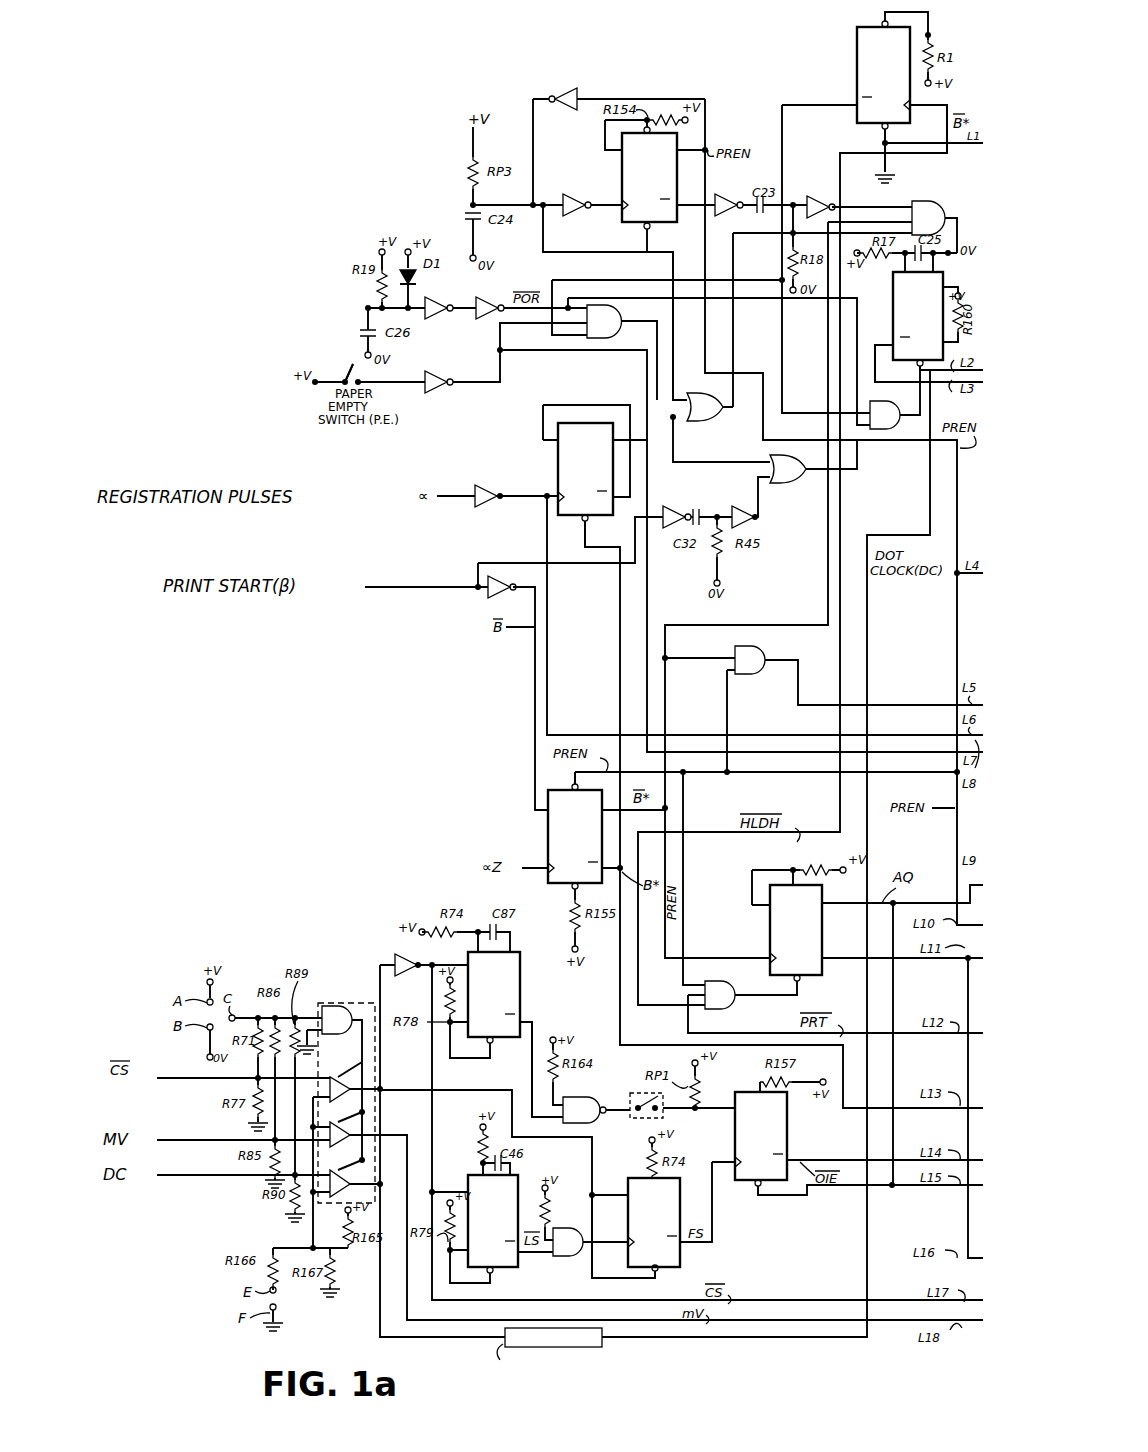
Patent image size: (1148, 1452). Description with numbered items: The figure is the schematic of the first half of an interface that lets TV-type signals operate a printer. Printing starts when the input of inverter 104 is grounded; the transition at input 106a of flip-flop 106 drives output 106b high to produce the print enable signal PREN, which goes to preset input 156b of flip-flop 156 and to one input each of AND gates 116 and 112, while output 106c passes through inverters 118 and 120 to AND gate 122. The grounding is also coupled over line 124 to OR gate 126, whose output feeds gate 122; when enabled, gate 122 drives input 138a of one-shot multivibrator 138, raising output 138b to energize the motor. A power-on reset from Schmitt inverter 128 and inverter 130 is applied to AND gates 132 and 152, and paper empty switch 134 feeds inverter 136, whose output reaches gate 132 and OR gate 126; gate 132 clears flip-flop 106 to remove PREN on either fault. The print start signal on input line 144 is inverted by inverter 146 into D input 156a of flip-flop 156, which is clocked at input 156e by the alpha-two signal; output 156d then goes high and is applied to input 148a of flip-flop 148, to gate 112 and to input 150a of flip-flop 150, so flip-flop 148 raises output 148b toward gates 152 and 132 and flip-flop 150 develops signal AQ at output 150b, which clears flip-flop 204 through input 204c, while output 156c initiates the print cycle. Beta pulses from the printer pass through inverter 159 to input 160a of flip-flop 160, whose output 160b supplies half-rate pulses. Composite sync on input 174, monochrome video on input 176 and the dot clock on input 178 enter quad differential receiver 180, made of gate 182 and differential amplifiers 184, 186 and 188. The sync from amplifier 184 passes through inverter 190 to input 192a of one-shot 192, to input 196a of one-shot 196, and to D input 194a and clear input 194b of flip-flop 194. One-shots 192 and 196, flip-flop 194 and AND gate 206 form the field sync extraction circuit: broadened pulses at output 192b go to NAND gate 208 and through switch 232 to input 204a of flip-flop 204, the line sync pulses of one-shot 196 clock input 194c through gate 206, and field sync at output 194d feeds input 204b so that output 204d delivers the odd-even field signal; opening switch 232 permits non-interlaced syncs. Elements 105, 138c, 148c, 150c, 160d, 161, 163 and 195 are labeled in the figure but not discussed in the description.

The inverter 104 is at (571, 194).
The inverter 105 is at (566, 90).
The D-type flip-flop 106 is at (662, 183).
The input of flip-flop 106 106a is at (608, 212).
The Q-bar output of flip-flop 106 106b is at (690, 149).
The Q output of flip-flop 106 106c is at (702, 205).
The AND gate 112 is at (740, 650).
The AND gate 116 is at (738, 1010).
The inverter 118 is at (730, 196).
The inverter 120 is at (815, 198).
The AND gate 122 is at (930, 202).
The line 124 is at (684, 244).
The OR gate 126 is at (710, 422).
The inverter 128 is at (447, 298).
The inverter 130 is at (493, 305).
The AND gate 132 is at (604, 321).
The paper empty switch 134 is at (350, 372).
The inverter 136 is at (438, 378).
The one-shot multivibrator 138 is at (930, 310).
The input of one-shot 138 138a is at (960, 280).
The Q output of one-shot 138 138b is at (889, 343).
The clear input of 138 138c is at (918, 373).
The input line 144 is at (412, 586).
The inverter 146 is at (492, 598).
The D-type flip-flop 148 is at (883, 75).
The input of flip-flop 148 148a is at (913, 104).
The Q output of flip-flop 148 148b is at (855, 104).
The clear input of 148 148c is at (880, 135).
The D-type flip-flop 150 is at (808, 935).
The input of flip-flop 150 150a is at (765, 960).
The output of flip-flop 150 150b is at (845, 897).
The Q-bar output of 150 150c is at (843, 962).
The AND gate 152 is at (884, 405).
The bistable flip-flop 156 is at (588, 843).
The D input of flip-flop 156 156a is at (548, 812).
The preset input of flip-flop 156 156b is at (575, 776).
The output of flip-flop 156 156c is at (607, 862).
The Q-bar output of flip-flop 156 156d is at (612, 803).
The clock input of flip-flop 156 156e is at (545, 871).
The inverter 159 is at (486, 486).
The bistable flip-flop 160 is at (598, 475).
The input of flip-flop 160 160a is at (548, 495).
The output of flip-flop 160 160b is at (660, 438).
The clear input of 160 160d is at (585, 522).
The inverter 161 is at (686, 506).
The buffer 163 is at (738, 506).
The input 174 is at (210, 1079).
The input 176 is at (208, 1142).
The input line 178 is at (198, 1177).
The quad differential receiver 180 is at (372, 1003).
The gate 182 is at (341, 1001).
The differential amplifier 184 is at (340, 1077).
The differential amplifier 186 is at (338, 1126).
The differential amplifier 188 is at (339, 1176).
The inverter 190 is at (398, 955).
The one-shot 192 is at (505, 996).
The input of one-shot 192 192a is at (451, 966).
The output of one-shot 192 192b is at (522, 1020).
The D-type flip-flop 194 is at (665, 1225).
The D input of flip-flop 194 194a is at (620, 1186).
The clear input of flip-flop 194 194b is at (628, 1280).
The input of flip-flop 194 194c is at (620, 1233).
The Q-bar output of flip-flop 194 194d is at (700, 1248).
The adjustable phase line 195 is at (562, 1345).
The one-shot 196 is at (505, 1219).
The input of one-shot 196 196a is at (442, 1191).
The bistable flip-flop 204 is at (773, 1139).
The input of flip-flop 204 204a is at (720, 1107).
The input of flip-flop 204 204b is at (722, 1162).
The clear input of flip-flop 204 204c is at (760, 1190).
The output of flip-flop 204 204d is at (790, 1162).
The AND gate 206 is at (564, 1256).
The NAND gate 208 is at (584, 1110).
The switch 232 is at (643, 1119).